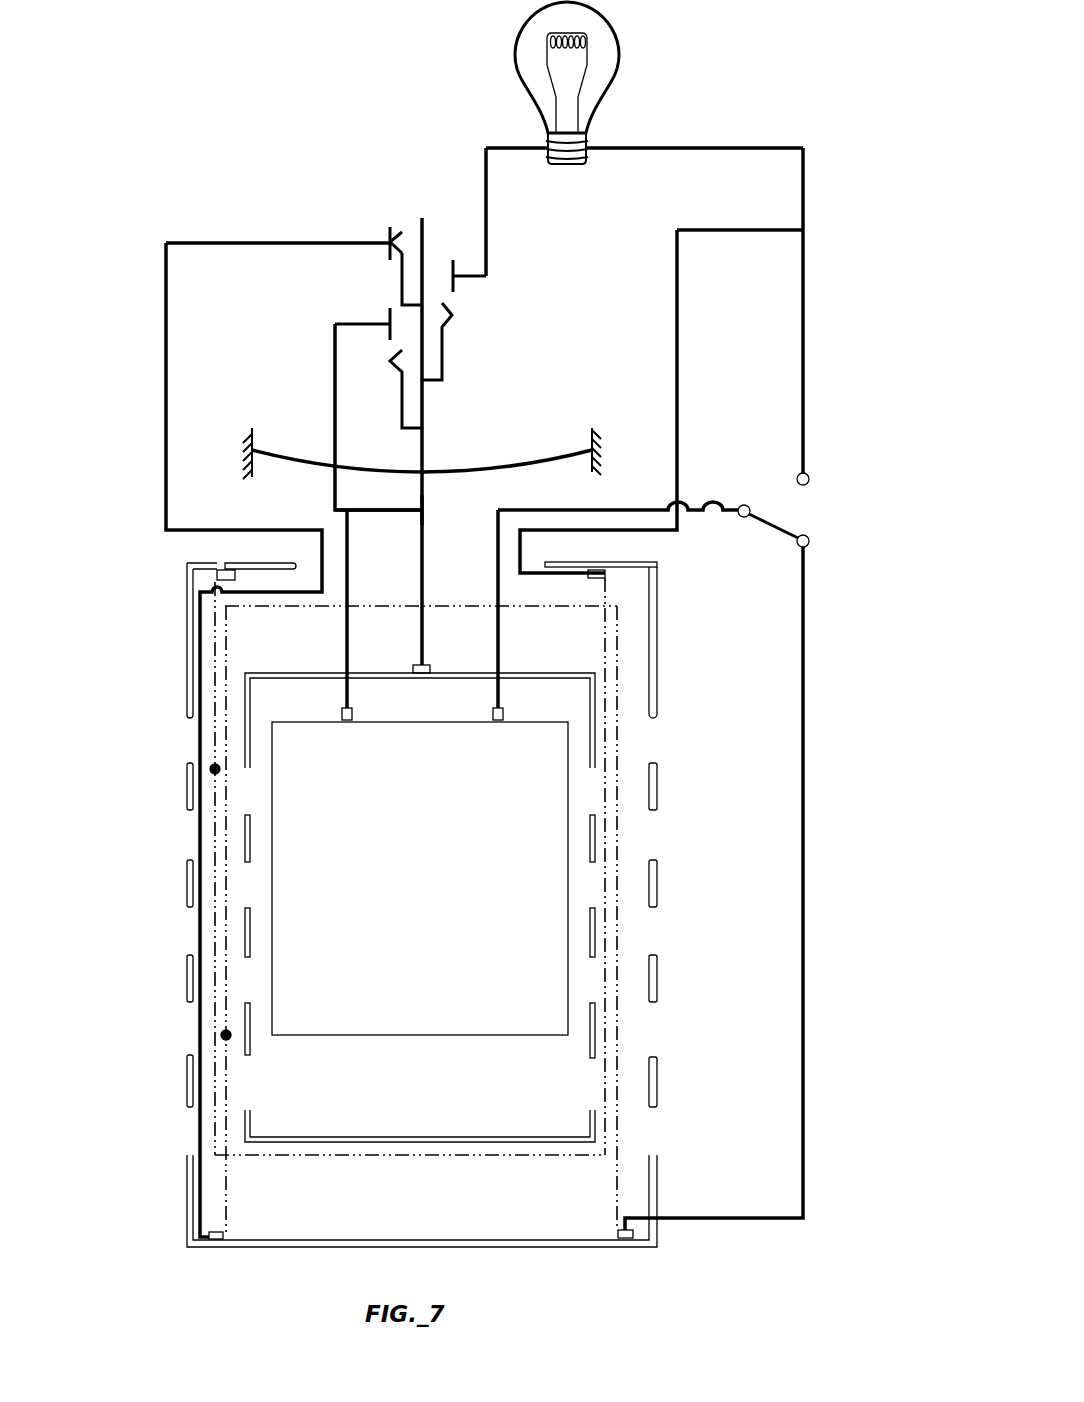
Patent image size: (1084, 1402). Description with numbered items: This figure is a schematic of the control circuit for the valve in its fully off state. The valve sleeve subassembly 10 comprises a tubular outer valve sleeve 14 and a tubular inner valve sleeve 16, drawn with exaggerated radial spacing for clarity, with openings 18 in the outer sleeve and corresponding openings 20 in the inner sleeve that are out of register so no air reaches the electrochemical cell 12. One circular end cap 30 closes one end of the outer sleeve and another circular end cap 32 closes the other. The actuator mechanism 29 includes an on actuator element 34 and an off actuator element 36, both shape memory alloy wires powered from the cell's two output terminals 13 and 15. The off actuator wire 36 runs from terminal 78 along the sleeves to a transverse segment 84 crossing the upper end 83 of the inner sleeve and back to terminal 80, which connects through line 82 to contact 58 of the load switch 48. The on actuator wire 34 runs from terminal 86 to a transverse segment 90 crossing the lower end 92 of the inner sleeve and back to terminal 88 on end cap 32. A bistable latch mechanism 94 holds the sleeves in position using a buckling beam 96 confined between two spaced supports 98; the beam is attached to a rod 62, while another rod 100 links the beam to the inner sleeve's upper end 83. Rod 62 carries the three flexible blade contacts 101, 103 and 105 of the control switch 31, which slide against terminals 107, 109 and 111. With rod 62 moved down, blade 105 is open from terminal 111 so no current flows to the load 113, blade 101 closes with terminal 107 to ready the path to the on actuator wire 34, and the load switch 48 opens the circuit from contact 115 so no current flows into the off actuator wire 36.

The valve sleeve subassembly 10 is at (395, 924).
The electrochemical cell 12 is at (420, 893).
The cell output terminal 13 is at (342, 715).
The outer valve sleeve 14 is at (385, 924).
The cell output terminal 15 is at (503, 715).
The inner valve sleeve 16 is at (250, 850).
The openings 18 is at (187, 725).
The openings 20 is at (248, 770).
The actuator mechanism 29 is at (747, 888).
The circular end cap 30 is at (323, 1248).
The control switch 31 is at (412, 291).
The circular end cap 32 is at (265, 562).
The on actuator element 34 is at (214, 769).
The off actuator element 36 is at (224, 1035).
The load switch 48 is at (814, 509).
The contact 58 is at (808, 547).
The rod 62 is at (423, 443).
The terminal 78 is at (221, 1240).
The terminal 80 is at (627, 1239).
The line 82 is at (803, 1075).
The upper end of inner sleeve 83 is at (420, 888).
The transverse segment 84 is at (472, 605).
The terminal 86 is at (222, 570).
The terminal 88 is at (597, 570).
The transverse segment 90 is at (345, 1157).
The lower end of inner sleeve 92 is at (445, 1130).
The bistable latch mechanism 94 is at (424, 425).
The bistable element or beam 96 is at (308, 462).
The supports 98 is at (252, 435).
The rod 100 is at (424, 497).
The flexible blade contact 101 is at (400, 263).
The flexible blade contact 103 is at (400, 375).
The flexible blade contact 105 is at (443, 345).
The terminal 107 is at (388, 235).
The terminal 109 is at (387, 333).
The terminal 111 is at (457, 266).
The load 113 is at (614, 48).
The contact 115 is at (808, 474).